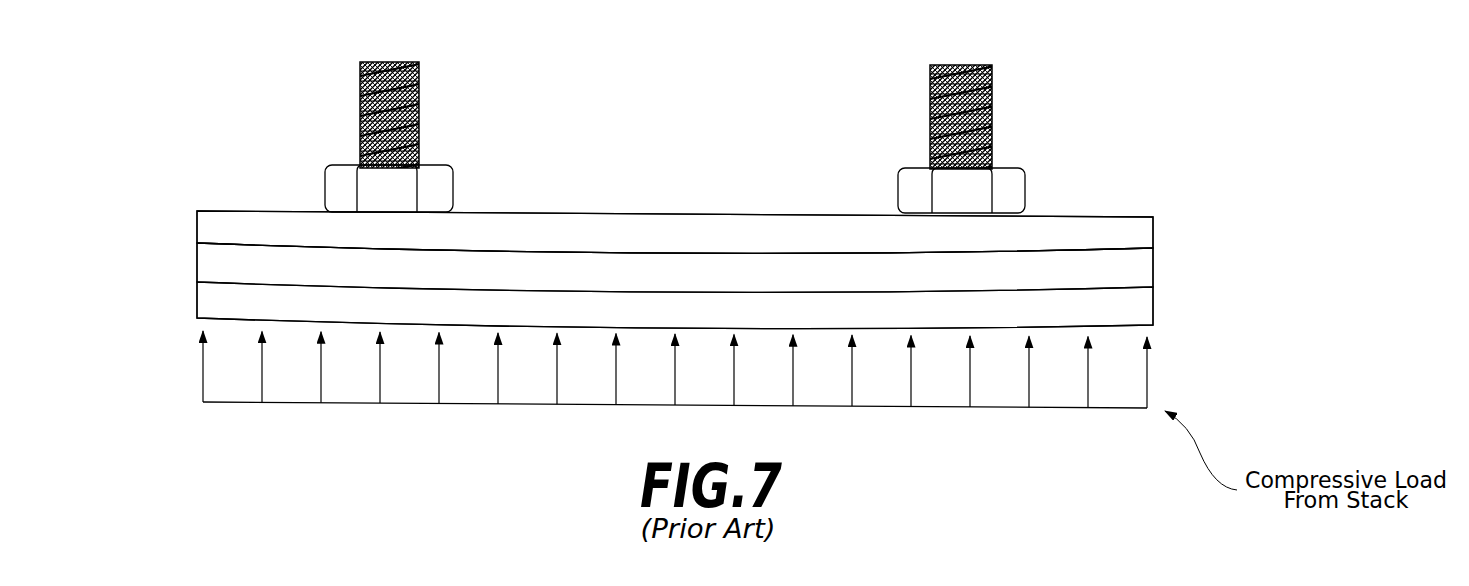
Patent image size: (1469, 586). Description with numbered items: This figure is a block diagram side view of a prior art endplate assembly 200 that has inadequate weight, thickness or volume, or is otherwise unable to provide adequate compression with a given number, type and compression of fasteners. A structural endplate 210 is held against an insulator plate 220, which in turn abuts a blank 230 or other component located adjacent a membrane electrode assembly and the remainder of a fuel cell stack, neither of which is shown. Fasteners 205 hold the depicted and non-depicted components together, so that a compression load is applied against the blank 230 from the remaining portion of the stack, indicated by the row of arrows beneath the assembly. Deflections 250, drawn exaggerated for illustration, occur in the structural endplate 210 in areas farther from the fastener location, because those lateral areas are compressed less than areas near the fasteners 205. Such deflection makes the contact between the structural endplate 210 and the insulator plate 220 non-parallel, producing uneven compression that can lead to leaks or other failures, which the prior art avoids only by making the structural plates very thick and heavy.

The endplate assembly 200 is at (172, 337).
The fasteners 205 is at (422, 92).
The structural endplate 210 is at (1157, 222).
The insulator plate 220 is at (1157, 282).
The blank 230 is at (1157, 317).
The deflections 250 is at (192, 243).